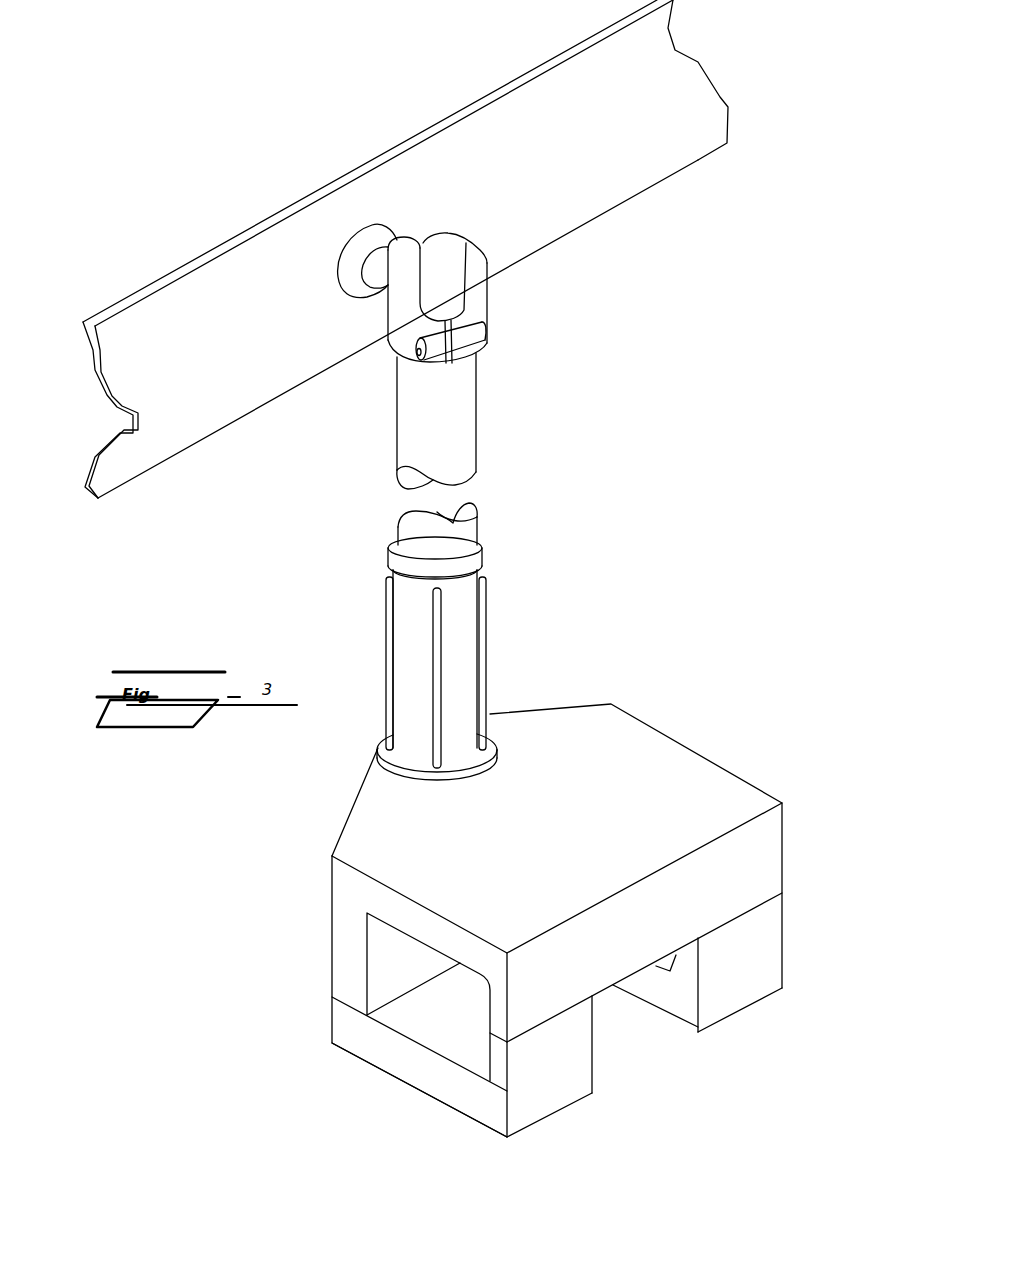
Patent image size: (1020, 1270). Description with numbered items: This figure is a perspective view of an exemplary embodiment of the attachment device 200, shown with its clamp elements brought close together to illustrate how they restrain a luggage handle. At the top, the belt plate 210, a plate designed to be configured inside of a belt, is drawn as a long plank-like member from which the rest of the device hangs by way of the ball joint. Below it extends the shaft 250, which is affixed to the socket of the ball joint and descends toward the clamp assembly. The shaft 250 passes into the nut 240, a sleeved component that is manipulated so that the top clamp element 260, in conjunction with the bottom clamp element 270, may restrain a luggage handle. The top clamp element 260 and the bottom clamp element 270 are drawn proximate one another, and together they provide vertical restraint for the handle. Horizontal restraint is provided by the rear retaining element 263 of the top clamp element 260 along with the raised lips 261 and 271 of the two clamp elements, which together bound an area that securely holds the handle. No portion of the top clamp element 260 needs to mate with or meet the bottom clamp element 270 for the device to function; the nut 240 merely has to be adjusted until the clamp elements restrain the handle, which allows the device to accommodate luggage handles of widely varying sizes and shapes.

The attachment device 200 is at (768, 78).
The belt plate 210 is at (538, 252).
The nut 240 is at (384, 657).
The shaft 250 is at (397, 527).
The top clamp element 260 is at (565, 709).
The raised lip 261 is at (484, 1000).
The rear retaining element 263 is at (333, 963).
The bottom clamp element 270 is at (398, 1078).
The raised lip 271 is at (692, 982).